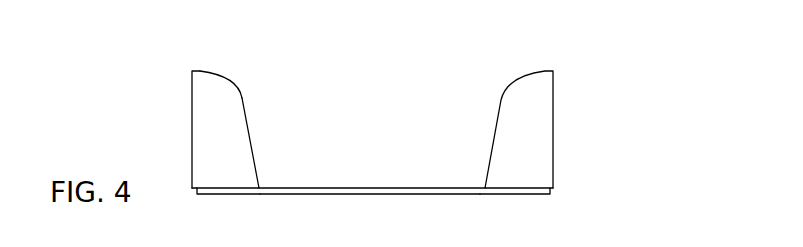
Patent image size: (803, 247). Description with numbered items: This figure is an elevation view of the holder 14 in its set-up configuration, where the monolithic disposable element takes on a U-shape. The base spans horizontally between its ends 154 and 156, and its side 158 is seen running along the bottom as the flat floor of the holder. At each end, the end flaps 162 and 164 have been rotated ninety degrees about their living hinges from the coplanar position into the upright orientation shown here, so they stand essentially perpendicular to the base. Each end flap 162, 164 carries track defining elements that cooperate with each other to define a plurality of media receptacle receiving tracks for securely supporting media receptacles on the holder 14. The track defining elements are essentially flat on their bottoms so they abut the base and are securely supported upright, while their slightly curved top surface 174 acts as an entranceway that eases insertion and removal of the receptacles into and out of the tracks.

The holder 14 is at (622, 127).
The end 154 is at (196, 193).
The end 156 is at (556, 192).
The side 158 is at (398, 192).
The end flap 162 is at (192, 112).
The end flap 164 is at (549, 90).
The curved top surface 174 is at (231, 85).